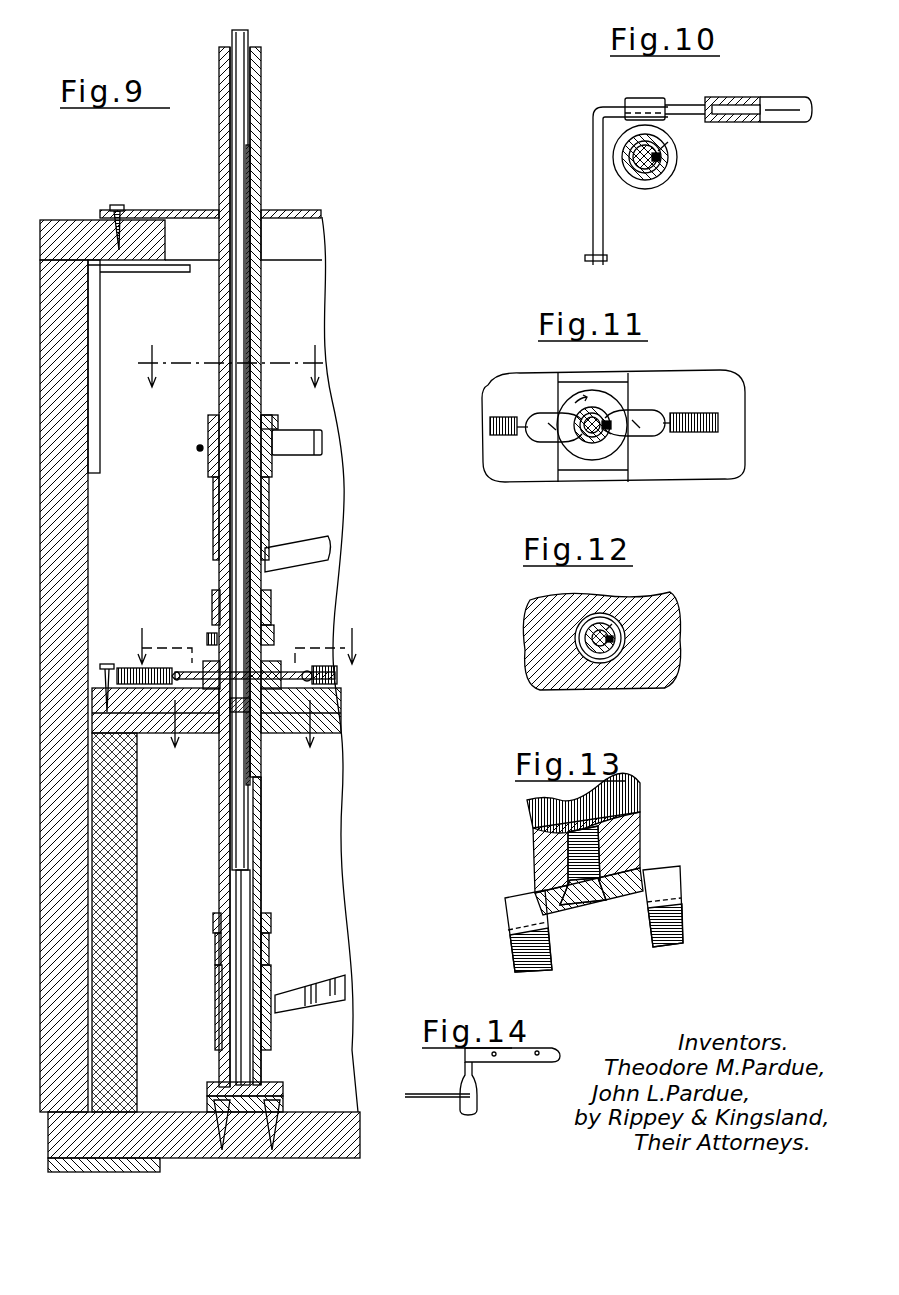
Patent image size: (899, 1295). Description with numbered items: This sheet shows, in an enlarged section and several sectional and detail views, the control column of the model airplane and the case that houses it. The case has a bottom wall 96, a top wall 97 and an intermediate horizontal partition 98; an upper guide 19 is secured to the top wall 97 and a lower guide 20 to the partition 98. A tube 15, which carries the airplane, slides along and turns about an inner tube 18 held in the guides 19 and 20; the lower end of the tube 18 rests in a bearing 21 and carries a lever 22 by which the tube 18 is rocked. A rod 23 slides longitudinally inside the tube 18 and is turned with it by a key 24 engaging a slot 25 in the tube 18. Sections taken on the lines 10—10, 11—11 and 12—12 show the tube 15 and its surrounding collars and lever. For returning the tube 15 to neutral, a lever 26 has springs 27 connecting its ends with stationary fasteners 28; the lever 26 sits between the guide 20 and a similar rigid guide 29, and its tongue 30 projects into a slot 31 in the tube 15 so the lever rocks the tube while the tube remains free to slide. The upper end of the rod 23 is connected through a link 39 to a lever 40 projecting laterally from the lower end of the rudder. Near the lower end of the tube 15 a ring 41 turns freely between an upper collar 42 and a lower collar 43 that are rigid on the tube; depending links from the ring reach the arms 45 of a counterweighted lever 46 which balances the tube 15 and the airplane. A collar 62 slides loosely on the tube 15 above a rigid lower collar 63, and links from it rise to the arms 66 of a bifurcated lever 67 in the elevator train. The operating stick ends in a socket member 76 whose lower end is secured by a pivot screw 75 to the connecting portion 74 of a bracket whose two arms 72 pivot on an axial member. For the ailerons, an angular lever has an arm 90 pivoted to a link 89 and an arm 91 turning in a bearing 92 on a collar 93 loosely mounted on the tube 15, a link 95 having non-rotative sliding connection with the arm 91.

In FIG. 9, the elevators 10 is at (232, 356).
In FIG. 9, the section line 11— 11 is at (252, 678).
In FIG. 9, the section line 12— 12 is at (145, 718).
In FIG. 9, the tube 15 is at (259, 126).
In FIG. 10, the tube 15 is at (622, 160).
In FIG. 11, the tube 15 is at (560, 422).
In FIG. 12, the tube 15 is at (595, 658).
In FIG. 9, the tube 18 is at (251, 173).
In FIG. 10, the tube 18 is at (633, 168).
In FIG. 11, the tube 18 is at (582, 442).
In FIG. 12, the tube 18 is at (580, 638).
In FIG. 9, the guide 19 is at (300, 212).
In FIG. 9, the guide 20 is at (165, 735).
In FIG. 9, the bearing 21 is at (283, 1088).
In FIG. 9, the lever 22 is at (283, 1101).
In FIG. 9, the rod 23 is at (236, 106).
In FIG. 10, the rod 23 is at (643, 170).
In FIG. 11, the rod 23 is at (590, 445).
In FIG. 12, the rod 23 is at (600, 625).
In FIG. 9, the key 24 is at (253, 702).
In FIG. 10, the key 24 is at (662, 158).
In FIG. 11, the key 24 is at (615, 428).
In FIG. 12, the key 24 is at (608, 648).
In FIG. 9, the slot 25 is at (254, 740).
In FIG. 10, the slot 25 is at (660, 150).
In FIG. 11, the slot 25 is at (603, 445).
In FIG. 12, the slot 25 is at (608, 628).
In FIG. 9, the lever 26 is at (336, 672).
In FIG. 11, the lever 26 is at (655, 432).
In FIG. 9, the springs 27 is at (140, 668).
In FIG. 11, the springs 27 is at (492, 430).
In FIG. 9, the stationary fasteners 28 is at (107, 664).
In FIG. 9, the rigid guide 29 is at (283, 672).
In FIG. 11, the tongue 30 is at (612, 410).
In FIG. 9, the slot 31 is at (262, 840).
In FIG. 11, the slot 31 is at (630, 442).
In FIG. 12, the slot 31 is at (630, 640).
In FIG. 14, the link 39 is at (446, 1094).
In FIG. 14, the lever 40 is at (474, 1068).
In FIG. 9, the ring 41 is at (215, 950).
In FIG. 9, the upper collar 42 is at (213, 921).
In FIG. 9, the lower collar 43 is at (215, 1000).
In FIG. 9, the arms 45 is at (296, 1006).
In FIG. 9, the lever 46 is at (343, 987).
In FIG. 9, the collar 62 is at (272, 607).
In FIG. 9, the lower collar 63 is at (275, 637).
In FIG. 9, the arms 66 is at (300, 546).
In FIG. 9, the bifurcated lever 67 is at (216, 508).
In FIG. 13, the arms 72 is at (683, 920).
In FIG. 13, the connecting portion 74 is at (645, 882).
In FIG. 13, the pivot screw 75 is at (580, 906).
In FIG. 13, the socket member 76 is at (636, 797).
In FIG. 10, the link 89 is at (607, 258).
In FIG. 9, the arm 90 is at (203, 449).
In FIG. 10, the arm 90 is at (597, 215).
In FIG. 10, the arm 91 is at (685, 105).
In FIG. 10, the bearing 92 is at (656, 100).
In FIG. 9, the collar 93 is at (218, 460).
In FIG. 10, the collar 93 is at (671, 170).
In FIG. 10, the link 95 is at (778, 120).
In FIG. 9, the bottom wall 96 is at (356, 1122).
In FIG. 9, the top wall 97 is at (135, 216).
In FIG. 9, the partition 98 is at (345, 710).
In FIG. 11, the partition 98 is at (708, 378).
In FIG. 12, the partition 98 is at (545, 660).